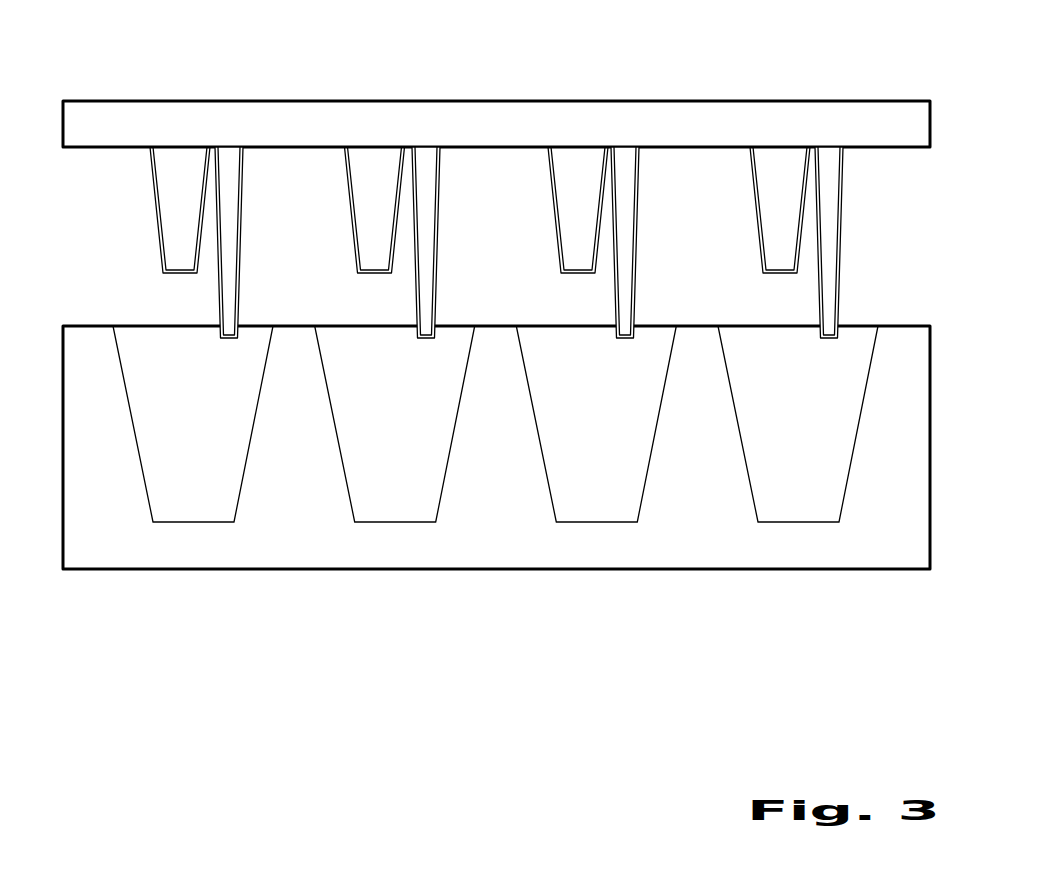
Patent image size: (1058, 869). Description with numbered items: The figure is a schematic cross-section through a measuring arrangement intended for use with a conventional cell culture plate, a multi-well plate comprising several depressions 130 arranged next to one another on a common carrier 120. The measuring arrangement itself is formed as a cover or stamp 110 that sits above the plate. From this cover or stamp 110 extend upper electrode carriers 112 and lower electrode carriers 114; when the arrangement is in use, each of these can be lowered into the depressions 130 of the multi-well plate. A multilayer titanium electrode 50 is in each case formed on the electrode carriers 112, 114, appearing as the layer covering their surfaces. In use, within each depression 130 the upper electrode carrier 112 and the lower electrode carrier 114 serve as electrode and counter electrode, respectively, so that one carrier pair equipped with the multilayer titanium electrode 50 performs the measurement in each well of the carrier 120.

The cover or stamp 110 is at (295, 110).
The upper electrode carrier 112 is at (173, 160).
The lower electrode carrier 114 is at (228, 240).
The multilayer titanium electrode 50 is at (163, 243).
The common carrier 120 is at (858, 513).
The depression 130 is at (155, 483).